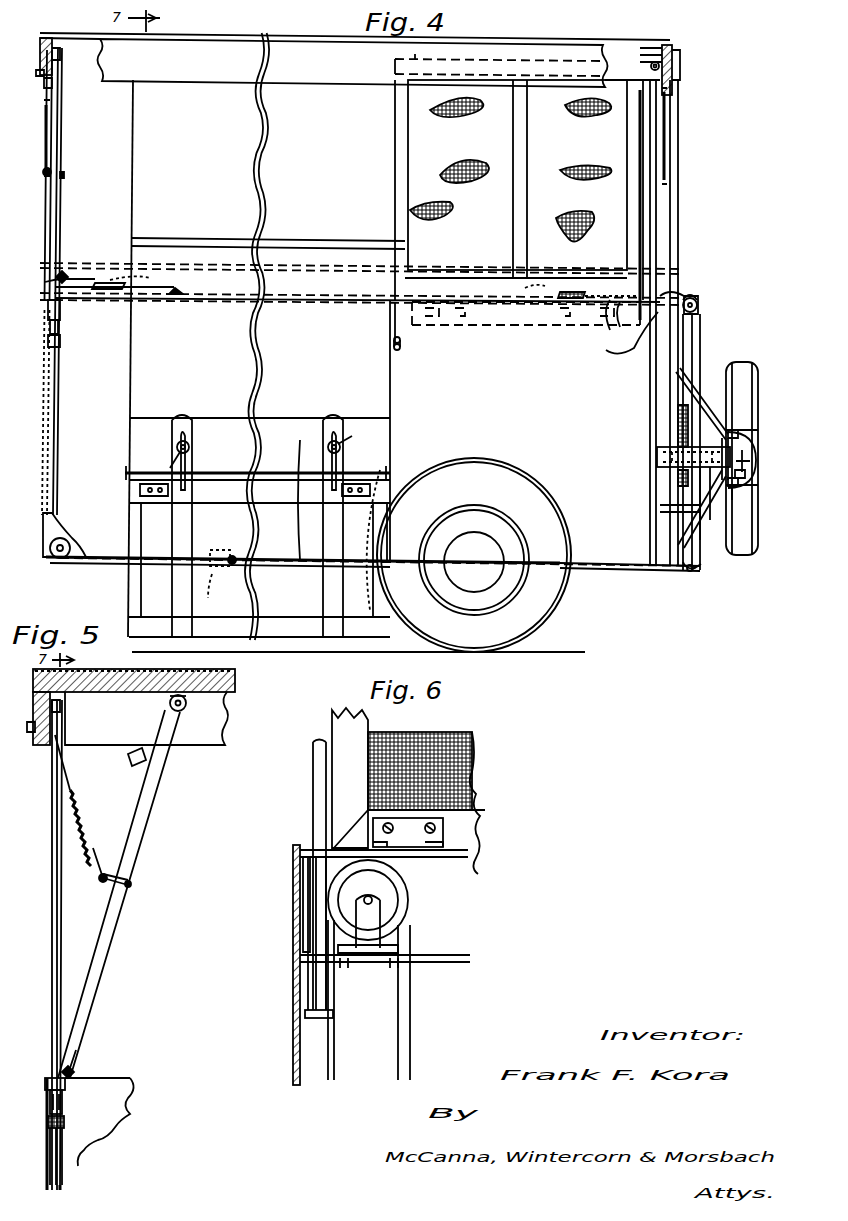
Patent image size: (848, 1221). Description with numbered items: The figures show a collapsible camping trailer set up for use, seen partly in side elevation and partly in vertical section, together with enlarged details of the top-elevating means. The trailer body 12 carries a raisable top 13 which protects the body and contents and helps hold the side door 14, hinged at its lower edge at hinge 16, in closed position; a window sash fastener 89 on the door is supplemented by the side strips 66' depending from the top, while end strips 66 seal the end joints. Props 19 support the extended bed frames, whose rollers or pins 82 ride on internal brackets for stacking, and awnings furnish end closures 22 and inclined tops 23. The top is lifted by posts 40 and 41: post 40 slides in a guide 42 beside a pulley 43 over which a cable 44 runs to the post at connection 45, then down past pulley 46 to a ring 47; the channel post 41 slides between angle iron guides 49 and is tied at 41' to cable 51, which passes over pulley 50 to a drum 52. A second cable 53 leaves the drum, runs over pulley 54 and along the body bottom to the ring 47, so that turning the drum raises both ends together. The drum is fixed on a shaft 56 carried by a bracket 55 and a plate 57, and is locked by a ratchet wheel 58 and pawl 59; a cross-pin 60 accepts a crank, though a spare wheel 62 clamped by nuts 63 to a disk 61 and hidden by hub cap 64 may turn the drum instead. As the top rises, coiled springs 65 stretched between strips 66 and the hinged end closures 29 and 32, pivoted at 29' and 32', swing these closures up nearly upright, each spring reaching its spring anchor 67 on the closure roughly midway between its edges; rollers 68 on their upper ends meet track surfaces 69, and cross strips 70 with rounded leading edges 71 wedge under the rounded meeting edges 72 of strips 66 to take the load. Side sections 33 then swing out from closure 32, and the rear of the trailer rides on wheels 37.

In FIG. 4, the trailer body 12 is at (630, 512).
In FIG. 5, the trailer body 12 is at (132, 1088).
In FIG. 6, the trailer body 12 is at (294, 970).
In FIG. 4, the raisable top 13 is at (298, 38).
In FIG. 5, the raisable top 13 is at (42, 672).
In FIG. 4, the side door 14 is at (372, 595).
In FIG. 4, the door hinge 16 is at (368, 500).
In FIG. 4, the prop 19 is at (312, 582).
In FIG. 4, the end closure 22 is at (410, 330).
In FIG. 4, the inclined top 23 is at (405, 178).
In FIG. 4, the end closure 29 is at (92, 282).
In FIG. 5, the end closure 29 is at (119, 894).
In FIG. 6, the end closure 29 is at (318, 859).
In FIG. 4, the hinge 29' is at (75, 277).
In FIG. 5, the hinge 29' is at (86, 1064).
In FIG. 6, the hinge 29' is at (404, 803).
In FIG. 4, the end closure 32 is at (587, 322).
In FIG. 4, the hinge 32' is at (602, 322).
In FIG. 4, the side section 33 is at (510, 325).
In FIG. 4, the wheel 37 is at (556, 596).
In FIG. 4, the post 40 is at (60, 146).
In FIG. 5, the post 40 is at (50, 905).
In FIG. 6, the post 40 is at (312, 806).
In FIG. 4, the post 41 is at (676, 322).
In FIG. 4, the cable connection 41' is at (675, 333).
In FIG. 5, the guide 42 is at (66, 1090).
In FIG. 6, the guide 42 is at (300, 852).
In FIG. 4, the pulley 43 is at (62, 318).
In FIG. 5, the pulley 43 is at (64, 1108).
In FIG. 6, the pulley 43 is at (394, 892).
In FIG. 4, the rope or cable 44 is at (56, 340).
In FIG. 5, the rope or cable 44 is at (56, 1166).
In FIG. 6, the rope or cable 44 is at (412, 996).
In FIG. 5, the cable connection 45 is at (66, 1128).
In FIG. 6, the cable connection 45 is at (334, 1016).
In FIG. 4, the pulley 46 is at (64, 542).
In FIG. 4, the ring 47 is at (380, 577).
In FIG. 4, the angle iron guide 49 is at (700, 352).
In FIG. 4, the pulley 50 is at (698, 300).
In FIG. 4, the rope or cable 51 is at (700, 318).
In FIG. 4, the drum 52 is at (716, 500).
In FIG. 4, the rope or cable 53 is at (692, 504).
In FIG. 4, the pulley 54 is at (686, 572).
In FIG. 4, the bracket 55 is at (696, 384).
In FIG. 4, the shaft 56 is at (760, 455).
In FIG. 4, the plate 57 is at (668, 447).
In FIG. 4, the ratchet wheel 58 is at (678, 478).
In FIG. 4, the pawl 59 is at (678, 416).
In FIG. 4, the cross-pin 60 is at (752, 478).
In FIG. 4, the disk 61 is at (745, 444).
In FIG. 4, the spare wheel and tire 62 is at (750, 392).
In FIG. 4, the clamping nut 63 is at (748, 432).
In FIG. 4, the hub cap 64 is at (750, 488).
In FIG. 4, the coiled spring 65 is at (44, 123).
In FIG. 5, the coiled spring 65 is at (88, 806).
In FIG. 4, the depending strip 66 is at (362, 66).
In FIG. 5, the depending strip 66 is at (27, 727).
In FIG. 4, the side strip 66' is at (349, 94).
In FIG. 4, the spring anchor 67 is at (44, 176).
In FIG. 5, the spring anchor 67 is at (102, 882).
In FIG. 5, the roller 68 is at (184, 712).
In FIG. 5, the track surface 69 is at (120, 692).
In FIG. 4, the cross strip 70 is at (45, 90).
In FIG. 5, the cross strip 70 is at (130, 762).
In FIG. 5, the leading edge 71 is at (135, 745).
In FIG. 5, the meeting edge 72 is at (44, 750).
In FIG. 4, the roller or pin 82 is at (396, 470).
In FIG. 4, the window sash fastener 89 is at (404, 348).